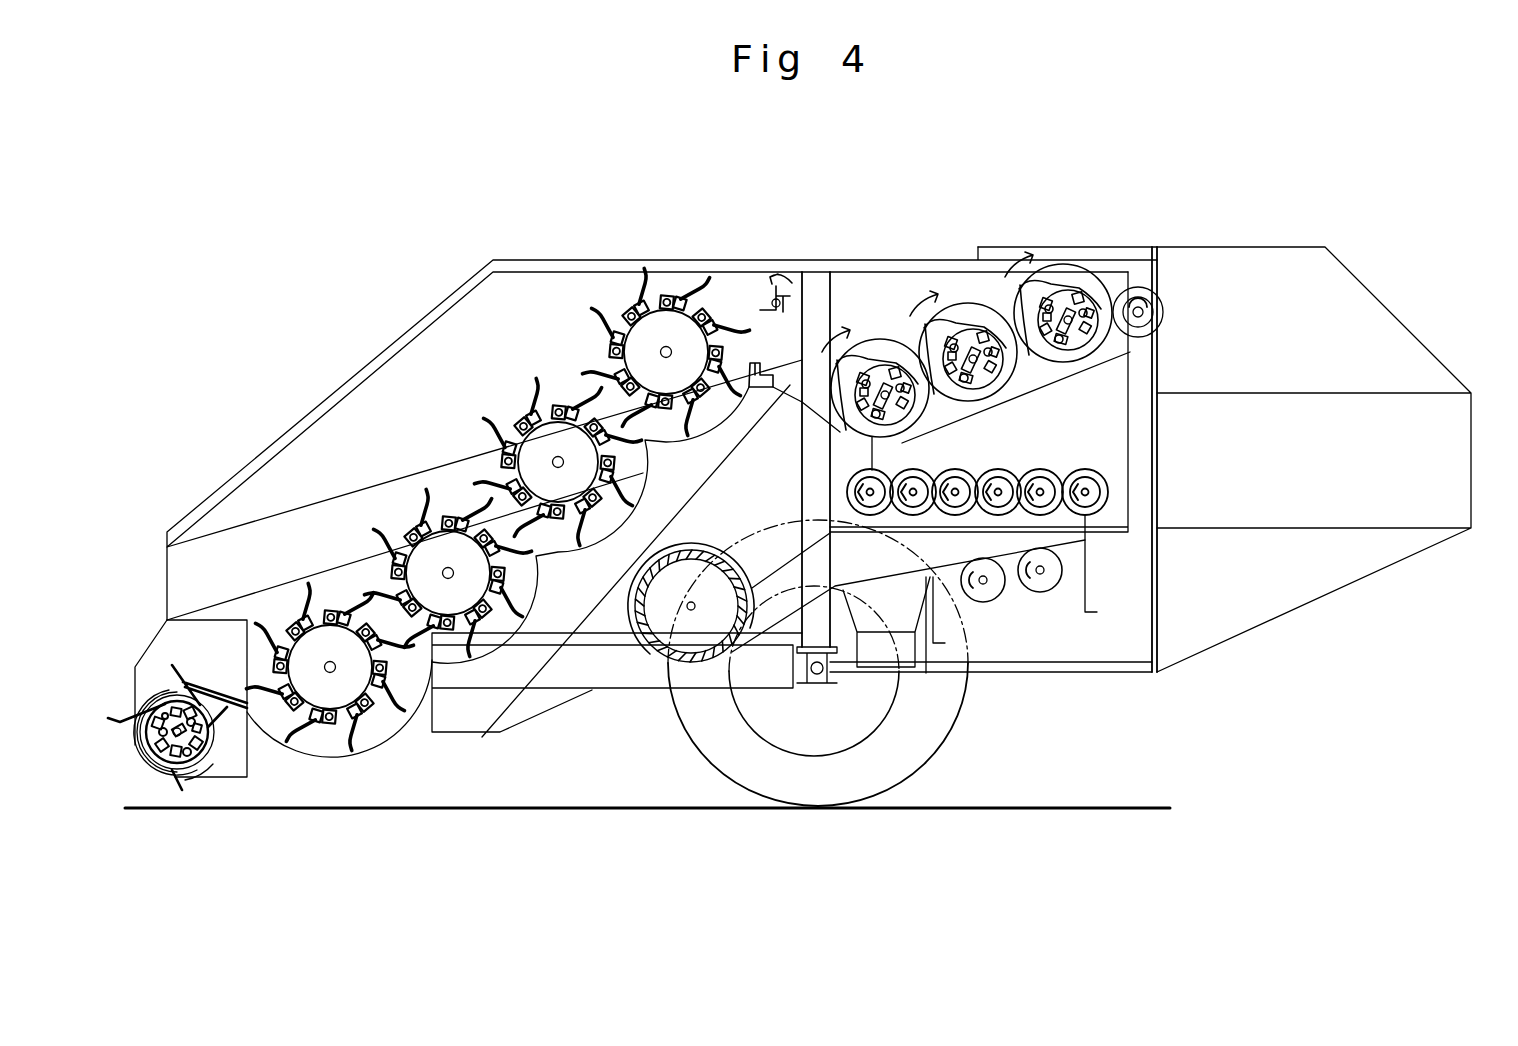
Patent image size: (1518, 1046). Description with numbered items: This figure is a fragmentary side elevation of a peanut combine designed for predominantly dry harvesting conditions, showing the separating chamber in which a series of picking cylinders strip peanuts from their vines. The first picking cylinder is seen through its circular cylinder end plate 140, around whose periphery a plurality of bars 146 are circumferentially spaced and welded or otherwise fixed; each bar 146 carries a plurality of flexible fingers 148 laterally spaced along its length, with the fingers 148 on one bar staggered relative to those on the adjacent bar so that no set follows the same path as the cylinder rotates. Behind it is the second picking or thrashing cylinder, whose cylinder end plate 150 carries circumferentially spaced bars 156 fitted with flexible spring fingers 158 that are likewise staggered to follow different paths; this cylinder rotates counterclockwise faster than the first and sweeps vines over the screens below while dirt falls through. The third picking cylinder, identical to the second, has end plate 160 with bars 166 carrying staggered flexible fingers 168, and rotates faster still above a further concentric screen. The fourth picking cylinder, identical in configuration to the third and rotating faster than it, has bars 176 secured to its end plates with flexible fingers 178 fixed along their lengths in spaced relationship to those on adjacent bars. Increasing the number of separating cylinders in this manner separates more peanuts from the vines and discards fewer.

The cylinder end plate 140 is at (317, 627).
The bar 146 is at (290, 627).
The flexible finger 148 is at (302, 603).
The cylinder end plate 150 is at (437, 533).
The bar 156 is at (407, 530).
The flexible spring finger 158 is at (417, 503).
The cylinder end plate 160 is at (547, 420).
The bar 166 is at (530, 420).
The flexible finger 168 is at (523, 408).
The bar 176 is at (632, 318).
The flexible finger 178 is at (642, 310).